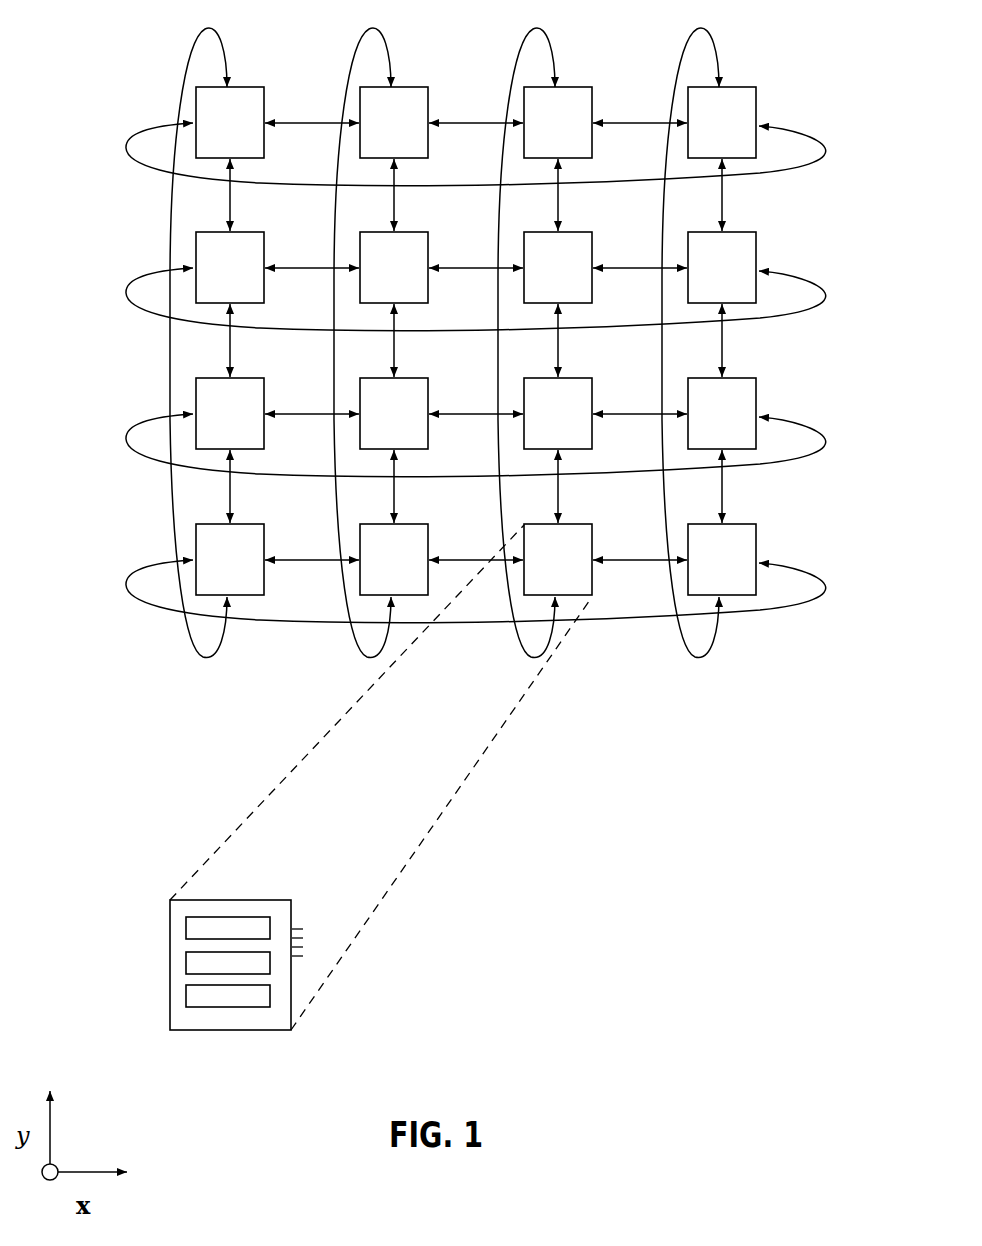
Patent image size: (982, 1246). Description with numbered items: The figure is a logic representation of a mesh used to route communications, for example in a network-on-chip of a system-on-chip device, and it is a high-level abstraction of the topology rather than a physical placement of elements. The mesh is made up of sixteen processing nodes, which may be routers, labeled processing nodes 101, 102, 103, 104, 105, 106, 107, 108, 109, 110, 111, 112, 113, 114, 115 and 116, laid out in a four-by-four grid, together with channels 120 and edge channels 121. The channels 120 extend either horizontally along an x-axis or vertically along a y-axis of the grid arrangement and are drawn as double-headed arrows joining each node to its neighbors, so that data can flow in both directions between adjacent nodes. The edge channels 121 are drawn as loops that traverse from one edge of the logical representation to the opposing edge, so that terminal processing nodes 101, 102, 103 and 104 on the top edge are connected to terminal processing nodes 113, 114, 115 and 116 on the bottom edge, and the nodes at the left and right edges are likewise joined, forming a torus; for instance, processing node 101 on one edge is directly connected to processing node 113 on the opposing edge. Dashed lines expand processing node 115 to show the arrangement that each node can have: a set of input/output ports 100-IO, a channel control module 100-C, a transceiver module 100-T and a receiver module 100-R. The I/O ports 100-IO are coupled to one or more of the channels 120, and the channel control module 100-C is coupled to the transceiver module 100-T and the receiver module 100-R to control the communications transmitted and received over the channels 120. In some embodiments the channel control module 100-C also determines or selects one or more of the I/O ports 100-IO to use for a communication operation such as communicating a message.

The processing node 101 is at (230, 122).
The processing node 102 is at (394, 122).
The processing node 103 is at (558, 122).
The processing node 104 is at (722, 122).
The processing node 105 is at (230, 267).
The processing node 106 is at (394, 267).
The processing node 107 is at (558, 267).
The processing node 108 is at (722, 267).
The processing node 109 is at (230, 413).
The processing node 110 is at (394, 413).
The processing node 111 is at (558, 413).
The processing node 112 is at (722, 413).
The processing node 113 is at (230, 559).
The processing node 114 is at (394, 559).
The processing node 115 is at (558, 559).
The processing node 116 is at (722, 559).
The channel 120 is at (310, 122).
The edge channel 121 is at (824, 147).
The input/output port 100-IO is at (298, 928).
The channel control module 100-C is at (228, 928).
The transceiver module 100-T is at (228, 963).
The receiver module 100-R is at (228, 996).